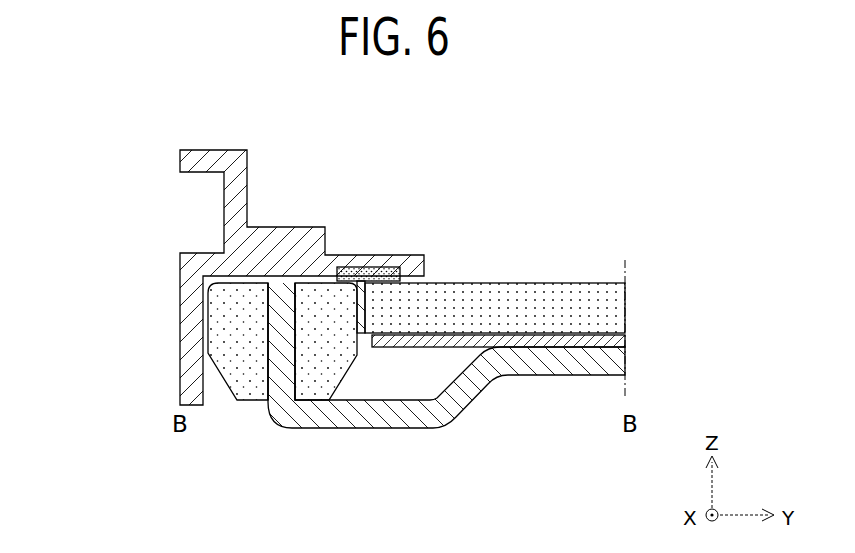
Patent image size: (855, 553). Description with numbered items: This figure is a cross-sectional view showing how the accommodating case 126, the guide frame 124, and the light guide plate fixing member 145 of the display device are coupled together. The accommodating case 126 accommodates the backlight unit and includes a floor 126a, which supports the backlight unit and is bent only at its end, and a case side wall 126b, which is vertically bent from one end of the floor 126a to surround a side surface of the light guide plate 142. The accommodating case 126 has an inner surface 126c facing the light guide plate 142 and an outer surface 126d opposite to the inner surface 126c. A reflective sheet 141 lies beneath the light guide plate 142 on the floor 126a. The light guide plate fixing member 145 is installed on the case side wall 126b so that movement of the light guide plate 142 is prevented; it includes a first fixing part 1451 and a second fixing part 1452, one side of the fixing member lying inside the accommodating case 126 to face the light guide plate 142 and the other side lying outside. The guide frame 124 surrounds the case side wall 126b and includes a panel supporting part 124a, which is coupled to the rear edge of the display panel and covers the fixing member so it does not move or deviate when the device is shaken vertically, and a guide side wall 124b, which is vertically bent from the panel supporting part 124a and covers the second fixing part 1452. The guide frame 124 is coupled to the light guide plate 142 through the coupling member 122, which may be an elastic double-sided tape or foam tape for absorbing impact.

The coupling member 122 is at (368, 267).
The guide frame 124 is at (228, 277).
The panel supporting part 124a is at (272, 260).
The guide side wall 124b is at (185, 308).
The light guide plate fixing member 145 is at (194, 341).
The first fixing part 1451 is at (312, 321).
The second fixing part 1452 is at (233, 362).
The accommodating case 126 is at (407, 408).
The floor 126a is at (388, 430).
The case side wall 126b is at (280, 372).
The inner surface 126c is at (297, 353).
The outer surface 126d is at (229, 389).
The reflective sheet 141 is at (538, 343).
The light guide plate 142 is at (617, 302).